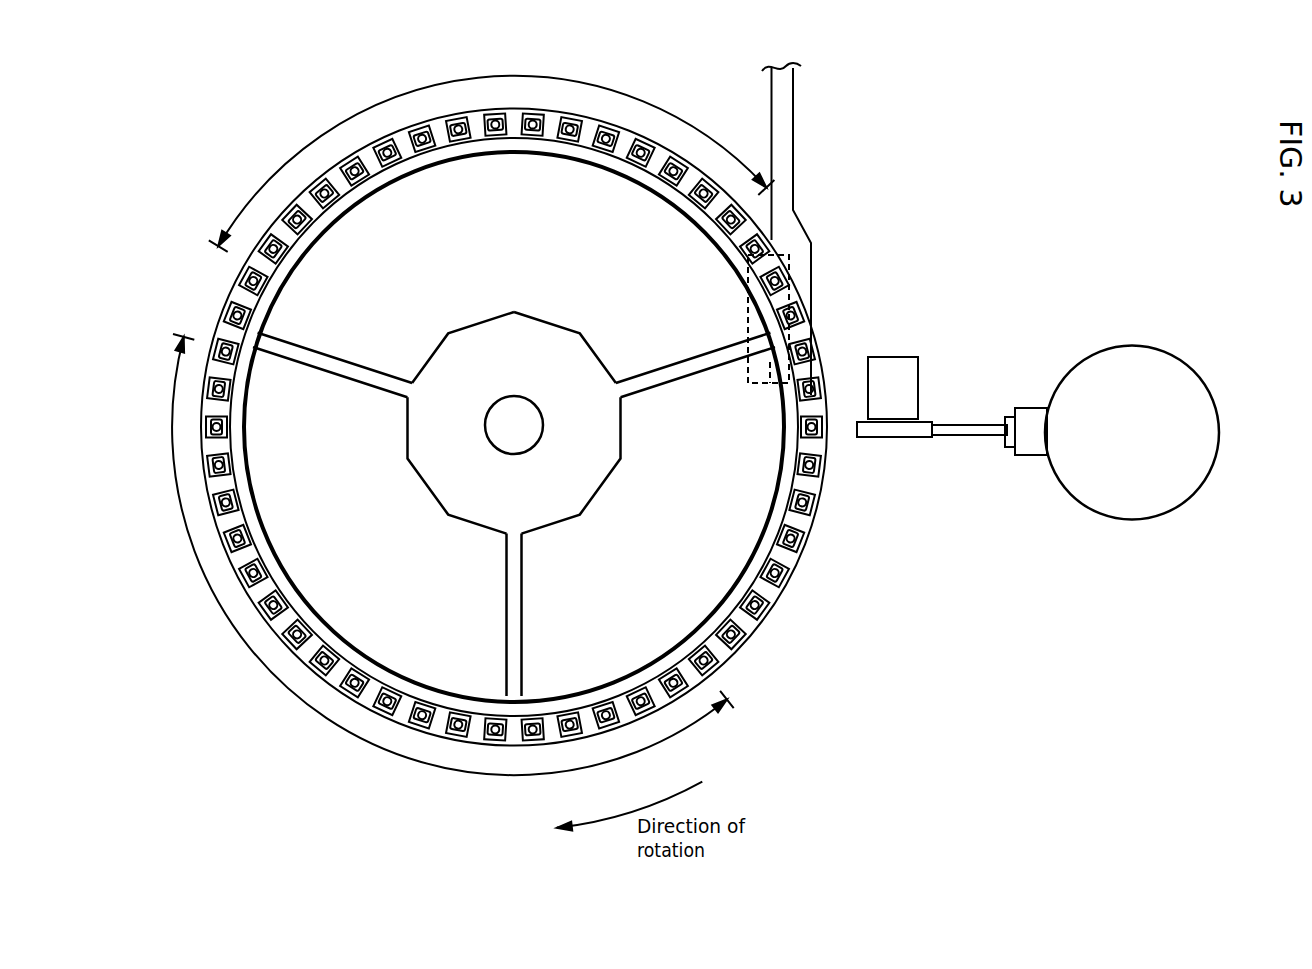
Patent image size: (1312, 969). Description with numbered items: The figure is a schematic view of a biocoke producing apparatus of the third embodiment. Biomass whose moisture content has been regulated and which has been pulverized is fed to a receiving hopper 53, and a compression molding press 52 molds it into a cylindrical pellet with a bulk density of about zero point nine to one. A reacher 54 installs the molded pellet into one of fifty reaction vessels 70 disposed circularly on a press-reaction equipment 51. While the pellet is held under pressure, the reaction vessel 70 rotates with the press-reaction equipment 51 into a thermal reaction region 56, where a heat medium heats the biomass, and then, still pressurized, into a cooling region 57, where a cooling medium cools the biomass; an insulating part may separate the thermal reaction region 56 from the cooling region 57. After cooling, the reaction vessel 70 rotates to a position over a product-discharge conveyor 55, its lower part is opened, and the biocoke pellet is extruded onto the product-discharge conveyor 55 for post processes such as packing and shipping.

The press-reaction equipment 51 is at (720, 663).
The compression molding press 52 is at (1020, 408).
The receiving hopper 53 is at (1130, 520).
The reacher 54 is at (892, 357).
The product-discharge conveyor 55 is at (777, 110).
The thermal reaction region 56 is at (437, 768).
The cooling region 57 is at (433, 75).
The reaction vessel 70 is at (768, 607).